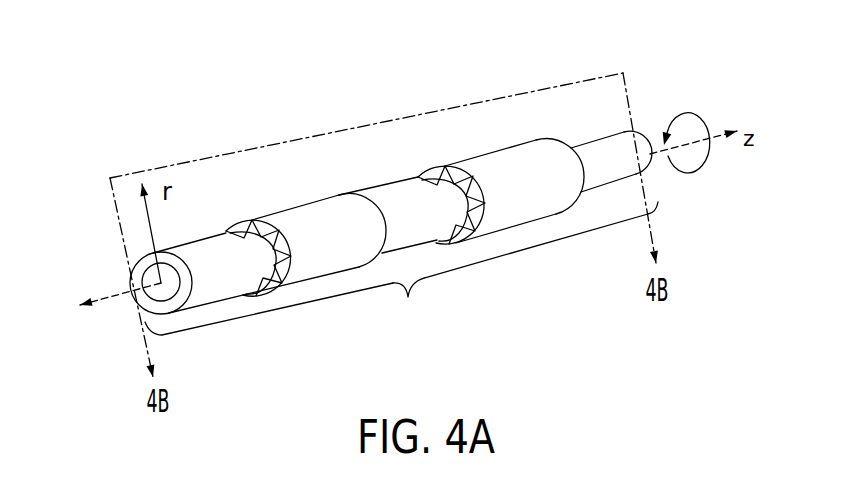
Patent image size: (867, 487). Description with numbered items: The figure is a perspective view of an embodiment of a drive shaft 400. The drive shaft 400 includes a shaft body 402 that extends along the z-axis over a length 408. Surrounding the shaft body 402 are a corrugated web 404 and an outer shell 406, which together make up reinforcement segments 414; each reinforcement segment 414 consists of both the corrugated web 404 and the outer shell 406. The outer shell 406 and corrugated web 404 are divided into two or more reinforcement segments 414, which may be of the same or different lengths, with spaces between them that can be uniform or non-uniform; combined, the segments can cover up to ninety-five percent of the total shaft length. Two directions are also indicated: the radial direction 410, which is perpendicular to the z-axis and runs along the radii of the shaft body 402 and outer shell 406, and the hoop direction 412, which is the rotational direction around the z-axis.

The drive shaft 400 is at (150, 139).
The shaft body 402 is at (222, 287).
The corrugated web 404 is at (272, 296).
The outer shell 406 is at (290, 200).
The length 408 is at (412, 310).
The radial direction 410 is at (150, 249).
The hoop direction 412 is at (704, 122).
The reinforcement segments 414 is at (322, 272).